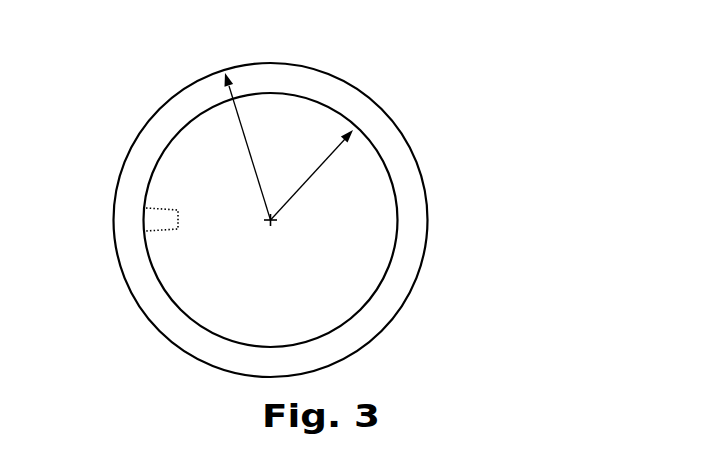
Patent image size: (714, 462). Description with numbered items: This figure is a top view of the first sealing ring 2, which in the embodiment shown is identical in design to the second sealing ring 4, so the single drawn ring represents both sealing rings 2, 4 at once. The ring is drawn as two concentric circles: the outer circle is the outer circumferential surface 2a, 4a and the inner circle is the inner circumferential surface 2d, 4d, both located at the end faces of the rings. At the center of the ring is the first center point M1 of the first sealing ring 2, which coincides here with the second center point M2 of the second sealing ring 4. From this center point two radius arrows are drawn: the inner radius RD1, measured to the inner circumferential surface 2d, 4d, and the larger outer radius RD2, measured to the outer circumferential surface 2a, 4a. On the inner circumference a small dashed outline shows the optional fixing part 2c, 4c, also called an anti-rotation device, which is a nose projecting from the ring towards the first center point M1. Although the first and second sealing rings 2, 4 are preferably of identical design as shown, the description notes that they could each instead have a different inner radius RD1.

The first sealing ring 2 is at (323, 219).
The second sealing ring 4 is at (323, 219).
The outer circumferential surface 2a is at (322, 220).
The outer circumferential surface 4a is at (424, 174).
The fixing part 2c is at (210, 233).
The fixing part 4c is at (178, 226).
The inner circumferential surface 2d is at (338, 220).
The inner circumferential surface 4d is at (312, 278).
The inner radius RD1 is at (309, 178).
The outer radius RD2 is at (246, 142).
The first center point M1 is at (306, 264).
The second center point M2 is at (273, 222).